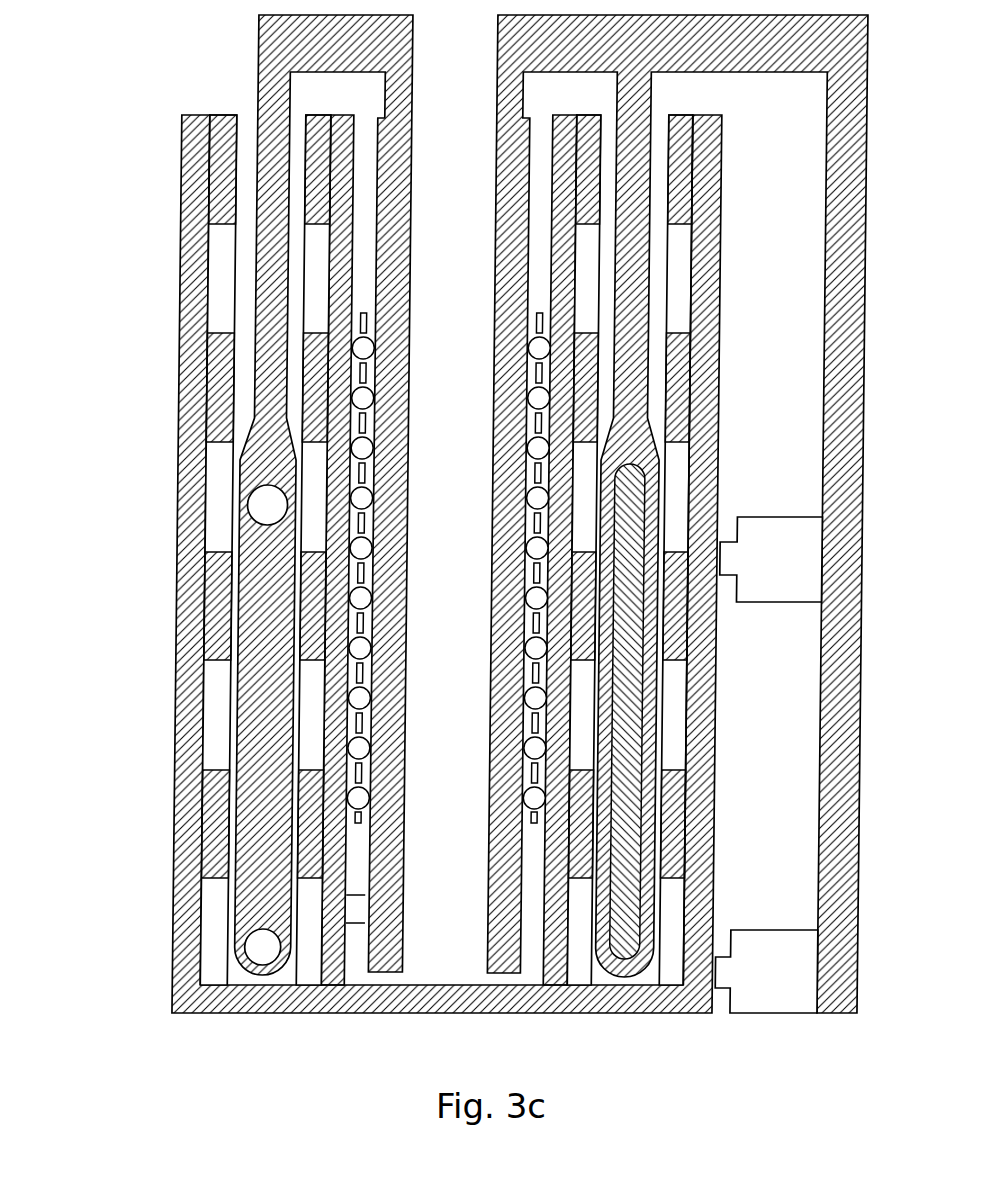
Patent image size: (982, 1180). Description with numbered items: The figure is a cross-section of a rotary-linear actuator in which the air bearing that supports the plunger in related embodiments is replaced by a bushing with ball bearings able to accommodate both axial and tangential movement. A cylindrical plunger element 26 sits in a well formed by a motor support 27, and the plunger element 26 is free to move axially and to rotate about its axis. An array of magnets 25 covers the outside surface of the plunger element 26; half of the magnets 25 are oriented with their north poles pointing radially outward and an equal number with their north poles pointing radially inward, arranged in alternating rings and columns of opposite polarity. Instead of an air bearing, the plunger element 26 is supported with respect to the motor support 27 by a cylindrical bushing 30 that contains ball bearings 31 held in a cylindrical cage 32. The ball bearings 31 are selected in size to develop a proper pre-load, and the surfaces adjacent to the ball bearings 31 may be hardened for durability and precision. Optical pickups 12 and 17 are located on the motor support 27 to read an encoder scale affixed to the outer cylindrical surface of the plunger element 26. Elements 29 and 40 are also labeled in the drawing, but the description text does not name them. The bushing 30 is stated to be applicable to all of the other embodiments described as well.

The optical pickup 12 is at (790, 565).
The optical pickup 17 is at (790, 978).
The magnets 25 is at (206, 895).
The plunger element 26 is at (623, 1013).
The motor support 27 is at (827, 192).
The wall 29 is at (412, 120).
The cylindrical bushing 30 is at (367, 104).
The ball bearings 31 is at (381, 818).
The cylindrical cage 32 is at (541, 817).
The pillar 40 is at (233, 92).